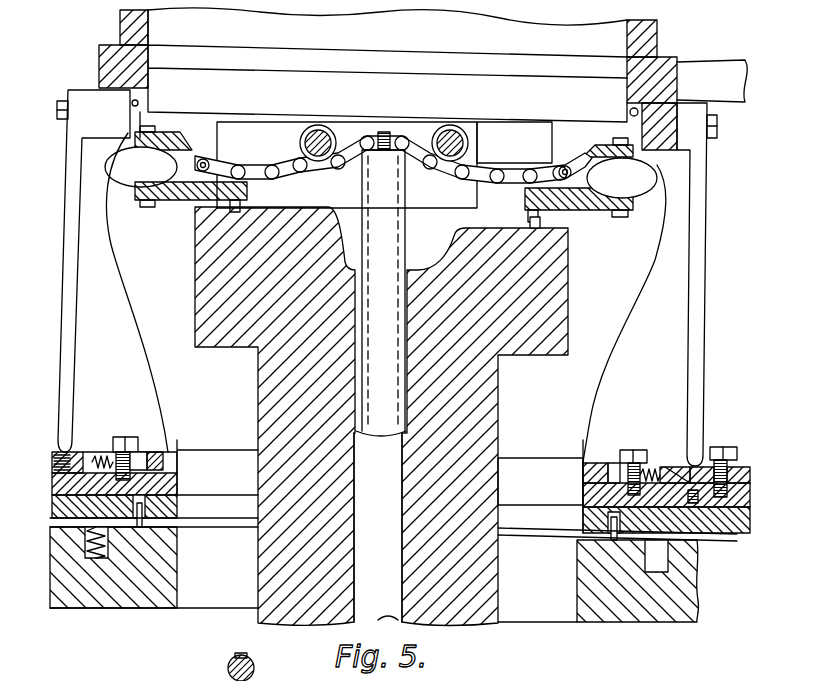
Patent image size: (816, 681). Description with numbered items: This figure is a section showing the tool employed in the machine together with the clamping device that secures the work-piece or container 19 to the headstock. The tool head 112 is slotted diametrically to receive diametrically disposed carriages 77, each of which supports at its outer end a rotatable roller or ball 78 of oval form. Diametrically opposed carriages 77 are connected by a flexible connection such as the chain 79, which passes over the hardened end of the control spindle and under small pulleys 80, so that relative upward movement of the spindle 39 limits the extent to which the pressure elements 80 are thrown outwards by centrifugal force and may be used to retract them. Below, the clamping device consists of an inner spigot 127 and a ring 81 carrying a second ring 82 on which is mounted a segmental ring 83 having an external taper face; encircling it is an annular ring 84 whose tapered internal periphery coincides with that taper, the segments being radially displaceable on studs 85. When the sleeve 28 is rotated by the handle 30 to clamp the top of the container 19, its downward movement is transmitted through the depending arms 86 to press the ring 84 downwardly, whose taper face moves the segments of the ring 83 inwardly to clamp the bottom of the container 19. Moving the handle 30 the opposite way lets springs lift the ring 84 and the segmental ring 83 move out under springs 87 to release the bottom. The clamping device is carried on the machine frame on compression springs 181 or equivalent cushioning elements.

The sleeve 28 is at (648, 48).
The handle 30 is at (698, 75).
The depending arms 86 is at (697, 380).
The carriages 77 is at (185, 200).
The rotatable roller or ball 78 is at (638, 182).
The chain 79 is at (480, 172).
The small pulleys 80 is at (432, 137).
The tool head 112 is at (548, 336).
The work-piece or container 19 is at (602, 383).
The spindle 39 is at (443, 514).
The compression springs 181 is at (98, 557).
The inner spigot 127 is at (583, 480).
The segmental ring 83 is at (577, 452).
The springs 87 is at (650, 467).
The studs 85 is at (628, 450).
The second ring 82 is at (725, 459).
The annular ring 84 is at (666, 515).
The ring 81 is at (607, 515).